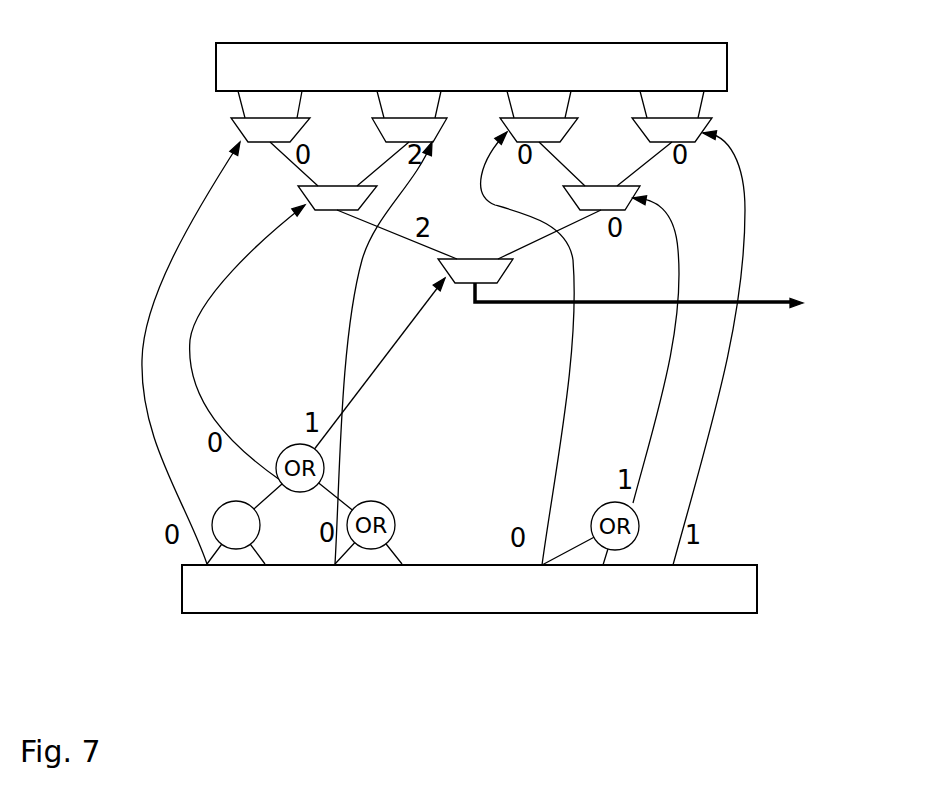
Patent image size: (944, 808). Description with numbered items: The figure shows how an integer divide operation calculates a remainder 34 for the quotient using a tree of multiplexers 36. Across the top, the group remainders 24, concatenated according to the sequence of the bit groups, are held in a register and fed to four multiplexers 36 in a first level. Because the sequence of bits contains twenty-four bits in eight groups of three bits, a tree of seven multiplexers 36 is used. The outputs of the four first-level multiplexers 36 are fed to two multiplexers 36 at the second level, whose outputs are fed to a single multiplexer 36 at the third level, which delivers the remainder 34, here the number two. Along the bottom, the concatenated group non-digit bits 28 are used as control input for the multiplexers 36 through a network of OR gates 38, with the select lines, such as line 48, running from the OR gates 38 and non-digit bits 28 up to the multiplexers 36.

The group remainders 24 is at (217, 77).
The multiplexers 36 is at (237, 130).
The select line 48 is at (150, 293).
The OR gates 38 is at (210, 500).
The non-digit bits 28 is at (182, 588).
The remainder 34 is at (758, 305).